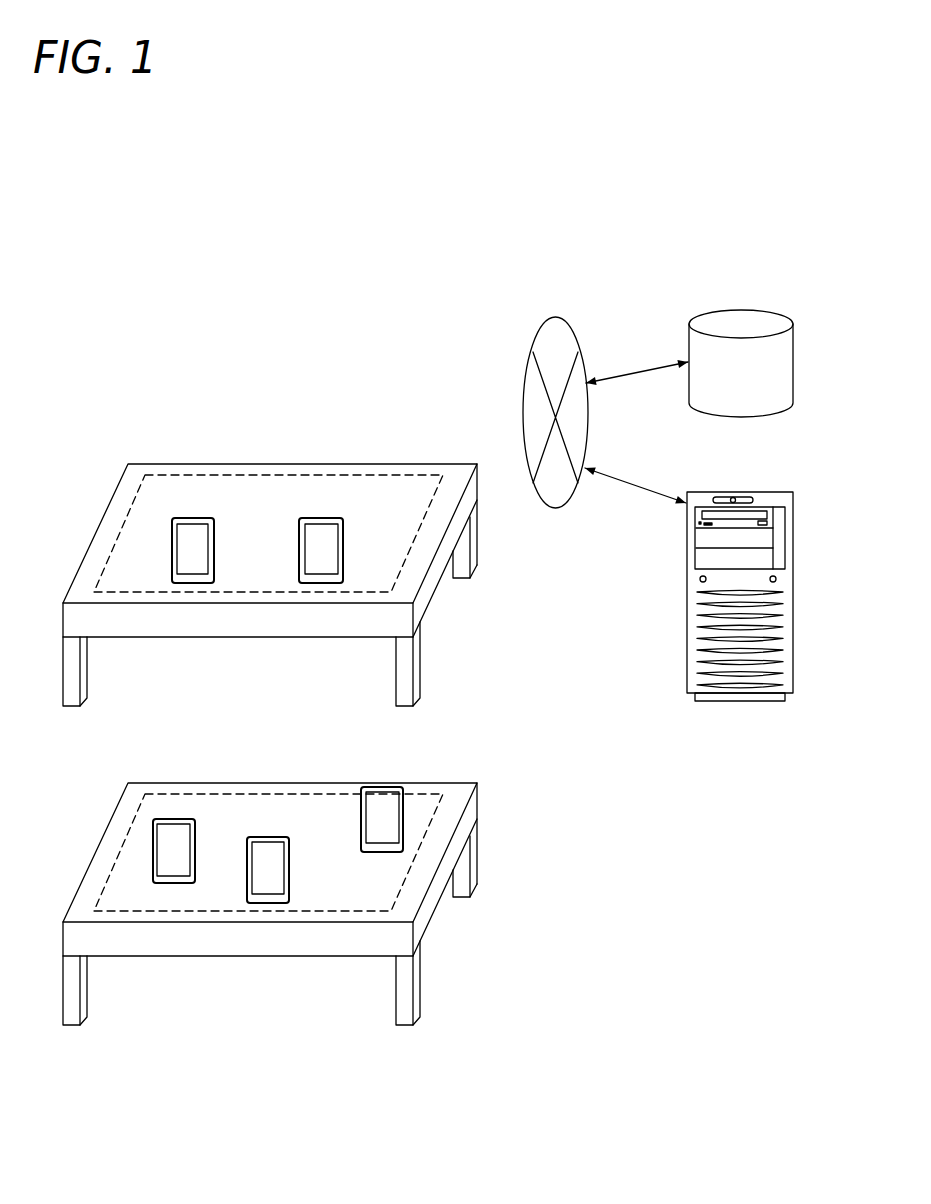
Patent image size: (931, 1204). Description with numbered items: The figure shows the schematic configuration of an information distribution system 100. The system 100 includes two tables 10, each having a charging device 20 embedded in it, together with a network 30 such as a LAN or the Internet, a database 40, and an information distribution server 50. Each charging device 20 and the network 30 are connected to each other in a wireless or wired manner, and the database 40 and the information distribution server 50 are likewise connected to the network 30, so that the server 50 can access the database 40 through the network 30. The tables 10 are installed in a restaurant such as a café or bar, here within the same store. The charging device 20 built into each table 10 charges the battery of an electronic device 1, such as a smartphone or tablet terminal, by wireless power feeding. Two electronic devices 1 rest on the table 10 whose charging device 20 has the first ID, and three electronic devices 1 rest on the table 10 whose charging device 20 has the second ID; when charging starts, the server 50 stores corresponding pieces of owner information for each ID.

The information distribution system 100 is at (277, 305).
The table 10 is at (137, 466).
The charging device 20 is at (512, 414).
The electronic device 1 is at (172, 538).
The network 30 is at (557, 316).
The database 40 is at (743, 313).
The information distribution server 50 is at (781, 492).